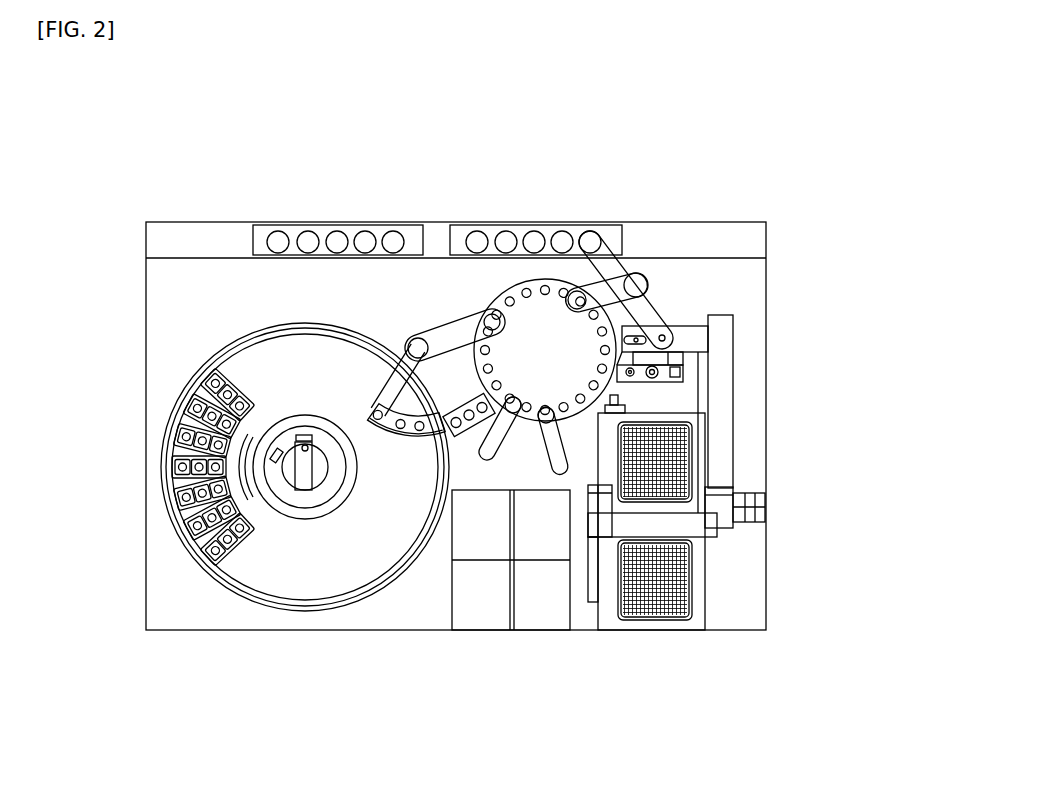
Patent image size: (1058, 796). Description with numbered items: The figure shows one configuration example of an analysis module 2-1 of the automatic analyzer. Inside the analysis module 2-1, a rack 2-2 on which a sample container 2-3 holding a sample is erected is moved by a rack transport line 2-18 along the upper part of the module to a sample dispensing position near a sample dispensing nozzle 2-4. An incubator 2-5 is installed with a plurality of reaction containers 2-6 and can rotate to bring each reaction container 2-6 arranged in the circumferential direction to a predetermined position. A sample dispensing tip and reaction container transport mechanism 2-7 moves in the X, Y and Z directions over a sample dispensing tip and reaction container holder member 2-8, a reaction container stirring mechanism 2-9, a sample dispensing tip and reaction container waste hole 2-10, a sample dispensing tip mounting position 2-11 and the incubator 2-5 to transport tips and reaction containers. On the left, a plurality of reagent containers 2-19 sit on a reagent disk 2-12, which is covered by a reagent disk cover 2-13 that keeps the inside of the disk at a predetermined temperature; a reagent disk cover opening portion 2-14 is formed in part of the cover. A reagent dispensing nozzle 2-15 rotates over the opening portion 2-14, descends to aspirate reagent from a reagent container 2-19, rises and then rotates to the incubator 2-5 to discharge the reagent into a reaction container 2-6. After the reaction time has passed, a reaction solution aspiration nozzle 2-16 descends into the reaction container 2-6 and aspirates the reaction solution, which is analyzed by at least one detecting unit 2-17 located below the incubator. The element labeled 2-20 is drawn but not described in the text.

The analysis module 2-1 is at (690, 168).
The rack 2-2 is at (255, 238).
The sample container 2-3 is at (308, 242).
The sample dispensing nozzle 2-4 is at (595, 242).
The incubator 2-5 is at (533, 323).
The reaction container 2-6 is at (512, 298).
The sample dispensing tip and reaction container transport mechanism 2-7 is at (700, 335).
The sample dispensing tip and reaction container holder member 2-8 is at (660, 495).
The reaction container stirring mechanism 2-9 is at (668, 373).
The sample dispensing tip and reaction container waste hole 2-10 is at (655, 340).
The sample dispensing tip mounting position 2-11 is at (632, 374).
The reagent disk 2-12 is at (202, 393).
The reagent disk cover 2-13 is at (275, 552).
The reagent disk cover opening portion 2-14 is at (402, 432).
The reagent dispensing nozzle 2-15 is at (450, 335).
The reaction solution aspiration nozzle 2-16 is at (553, 432).
The detecting unit 2-17 is at (537, 592).
The rack transport line 2-18 is at (220, 245).
The reagent container 2-19 is at (198, 468).
The gripper base 2-20 is at (450, 403).